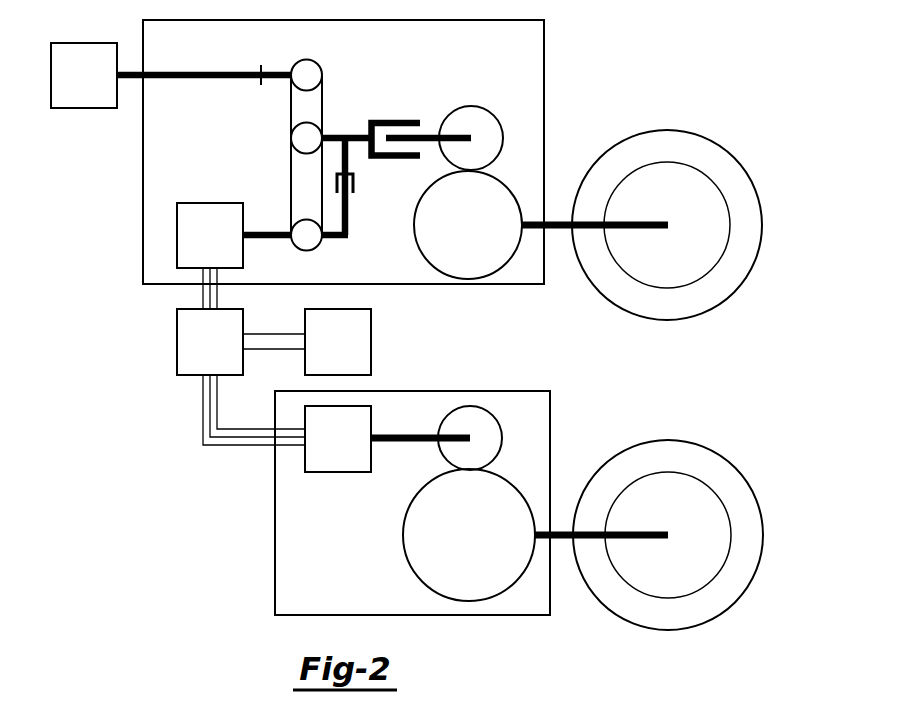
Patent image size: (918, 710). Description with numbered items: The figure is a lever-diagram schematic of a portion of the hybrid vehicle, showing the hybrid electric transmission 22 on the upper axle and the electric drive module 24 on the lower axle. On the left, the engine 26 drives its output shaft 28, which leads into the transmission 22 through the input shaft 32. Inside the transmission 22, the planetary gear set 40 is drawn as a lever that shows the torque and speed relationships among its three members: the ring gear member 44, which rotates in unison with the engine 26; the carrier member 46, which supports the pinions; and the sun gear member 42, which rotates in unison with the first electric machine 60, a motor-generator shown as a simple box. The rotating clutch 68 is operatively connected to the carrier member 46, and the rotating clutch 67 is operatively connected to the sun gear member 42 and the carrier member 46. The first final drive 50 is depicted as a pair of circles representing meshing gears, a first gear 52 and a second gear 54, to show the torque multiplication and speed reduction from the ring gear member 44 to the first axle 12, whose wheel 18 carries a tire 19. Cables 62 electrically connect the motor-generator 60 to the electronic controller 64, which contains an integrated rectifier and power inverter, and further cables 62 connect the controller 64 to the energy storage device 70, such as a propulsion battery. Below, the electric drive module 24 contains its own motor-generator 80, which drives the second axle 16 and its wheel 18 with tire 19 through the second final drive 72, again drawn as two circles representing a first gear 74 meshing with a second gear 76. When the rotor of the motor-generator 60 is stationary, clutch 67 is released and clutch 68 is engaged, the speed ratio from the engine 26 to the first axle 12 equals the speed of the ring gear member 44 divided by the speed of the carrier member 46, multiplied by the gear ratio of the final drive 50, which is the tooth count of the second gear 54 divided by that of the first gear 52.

The first axle 12 is at (560, 222).
The second axle 16 is at (562, 532).
The wheel 18 is at (666, 162).
The tire 19 is at (762, 225).
The hybrid electric transmission 22 is at (143, 185).
The electric drive module 24 is at (275, 505).
The engine 26 is at (92, 90).
The output shaft 28 is at (189, 78).
The input shaft 32 is at (280, 70).
The planetary gear set 40 is at (291, 190).
The sun gear member 42 is at (299, 250).
The ring gear member 44 is at (309, 58).
The carrier member 46 is at (291, 142).
The first final drive 50 is at (503, 158).
The first gear 52 is at (471, 106).
The second gear 54 is at (476, 240).
The first electric machine 60 is at (218, 253).
The cables 62 is at (203, 302).
The electronic controller 64 is at (218, 356).
The rotating clutch 67 is at (362, 206).
The rotating clutch 68 is at (397, 112).
The energy storage device 70 is at (346, 356).
The second final drive 72 is at (502, 464).
The first gear 74 is at (470, 406).
The second gear 76 is at (477, 550).
The motor-generator 80 is at (346, 454).